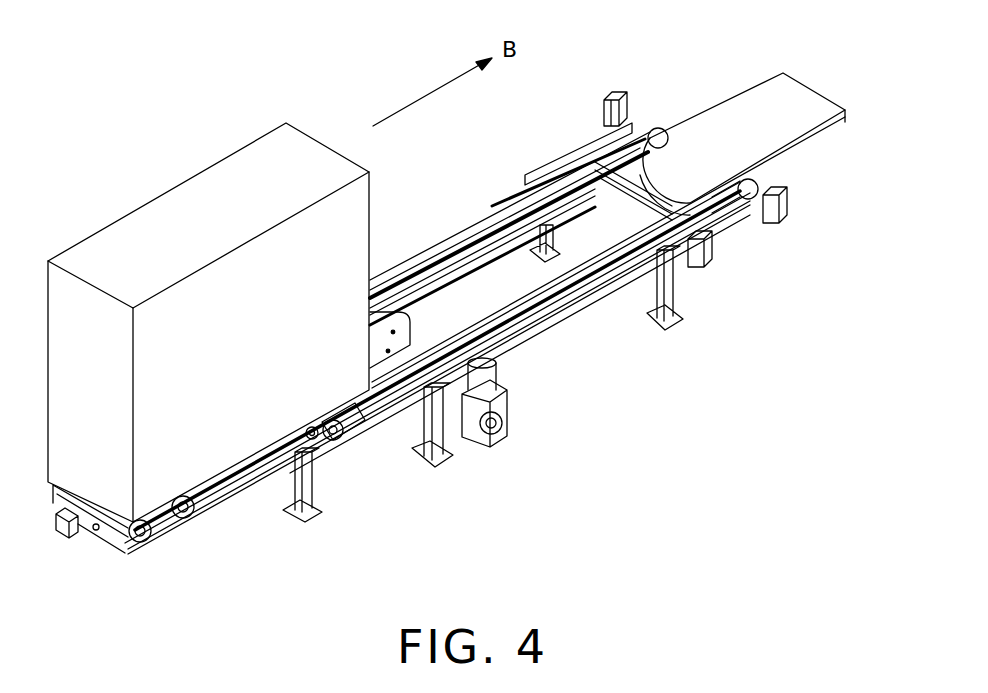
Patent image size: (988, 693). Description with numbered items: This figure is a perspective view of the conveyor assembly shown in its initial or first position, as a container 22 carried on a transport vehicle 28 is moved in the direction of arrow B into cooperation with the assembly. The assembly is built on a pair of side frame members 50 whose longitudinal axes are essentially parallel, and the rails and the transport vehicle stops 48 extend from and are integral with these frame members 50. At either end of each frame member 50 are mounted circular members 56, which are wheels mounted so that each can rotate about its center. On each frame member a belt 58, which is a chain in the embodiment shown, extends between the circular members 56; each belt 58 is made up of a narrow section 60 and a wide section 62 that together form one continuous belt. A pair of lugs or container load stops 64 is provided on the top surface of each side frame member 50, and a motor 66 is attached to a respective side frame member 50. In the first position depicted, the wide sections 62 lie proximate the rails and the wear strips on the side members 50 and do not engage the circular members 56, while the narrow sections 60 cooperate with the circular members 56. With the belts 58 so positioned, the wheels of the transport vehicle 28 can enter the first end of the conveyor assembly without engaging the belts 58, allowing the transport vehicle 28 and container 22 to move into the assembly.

The container 22 is at (262, 354).
The transport vehicle 28 is at (163, 543).
The transport vehicle stops 48 is at (583, 203).
The side frame members 50 is at (421, 287).
The circular members 56 is at (670, 123).
The belt 58 is at (500, 214).
The narrow section 60 is at (652, 127).
The wide section 62 is at (425, 293).
The container load stops 64 is at (380, 422).
The motor 66 is at (497, 405).